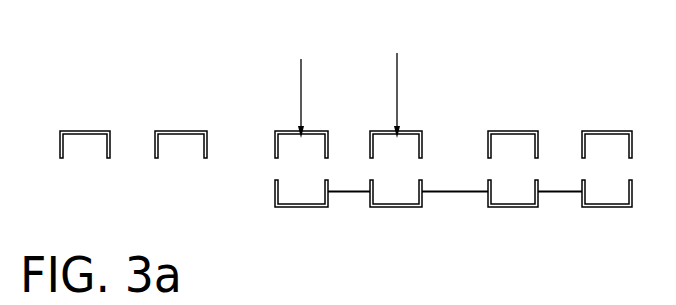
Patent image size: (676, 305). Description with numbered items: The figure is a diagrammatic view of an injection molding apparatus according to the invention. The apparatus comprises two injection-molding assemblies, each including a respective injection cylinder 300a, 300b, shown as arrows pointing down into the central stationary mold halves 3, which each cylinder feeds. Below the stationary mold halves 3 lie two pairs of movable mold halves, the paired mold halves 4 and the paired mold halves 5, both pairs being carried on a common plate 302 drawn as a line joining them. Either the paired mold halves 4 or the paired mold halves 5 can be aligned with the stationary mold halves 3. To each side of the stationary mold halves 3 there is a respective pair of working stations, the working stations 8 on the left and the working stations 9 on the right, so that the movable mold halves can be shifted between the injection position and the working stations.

The working stations 8 is at (95, 131).
The mold half 3 is at (384, 137).
The working stations 9 is at (527, 130).
The paired mold halves 4 is at (303, 207).
The paired mold halves 5 is at (598, 207).
The common plate 302 is at (472, 192).
The injection cylinder 300a is at (301, 74).
The injection cylinder 300b is at (397, 81).